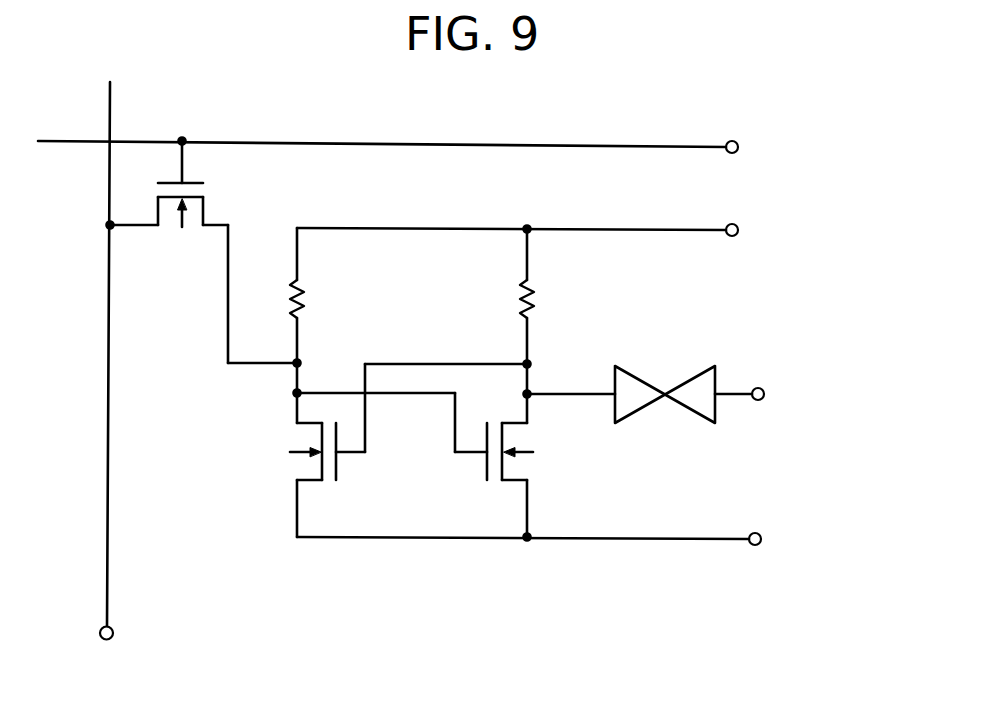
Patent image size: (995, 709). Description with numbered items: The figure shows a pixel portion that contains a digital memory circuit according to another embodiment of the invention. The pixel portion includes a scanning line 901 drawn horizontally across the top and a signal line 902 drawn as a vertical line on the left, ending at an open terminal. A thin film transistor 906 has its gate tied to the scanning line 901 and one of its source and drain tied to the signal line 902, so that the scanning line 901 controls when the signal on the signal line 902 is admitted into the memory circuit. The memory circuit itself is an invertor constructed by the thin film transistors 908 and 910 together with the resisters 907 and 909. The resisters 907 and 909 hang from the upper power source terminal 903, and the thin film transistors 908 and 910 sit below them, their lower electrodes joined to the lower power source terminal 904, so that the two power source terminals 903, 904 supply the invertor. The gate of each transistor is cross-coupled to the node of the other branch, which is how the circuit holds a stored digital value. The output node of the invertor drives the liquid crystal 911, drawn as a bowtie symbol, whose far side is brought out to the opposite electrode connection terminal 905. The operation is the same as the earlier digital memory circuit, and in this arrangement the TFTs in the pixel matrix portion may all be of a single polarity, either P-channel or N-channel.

The scanning line 901 is at (738, 147).
The signal line 902 is at (108, 594).
The power source terminal 903 is at (738, 230).
The power source terminal 904 is at (761, 539).
The opposite electrode connection terminal 905 is at (764, 394).
The thin film transistor 906 is at (222, 205).
The resister 907 is at (305, 280).
The thin film transistor 908 is at (348, 468).
The resister 909 is at (537, 280).
The thin film transistor 910 is at (538, 468).
The liquid crystal 911 is at (692, 378).